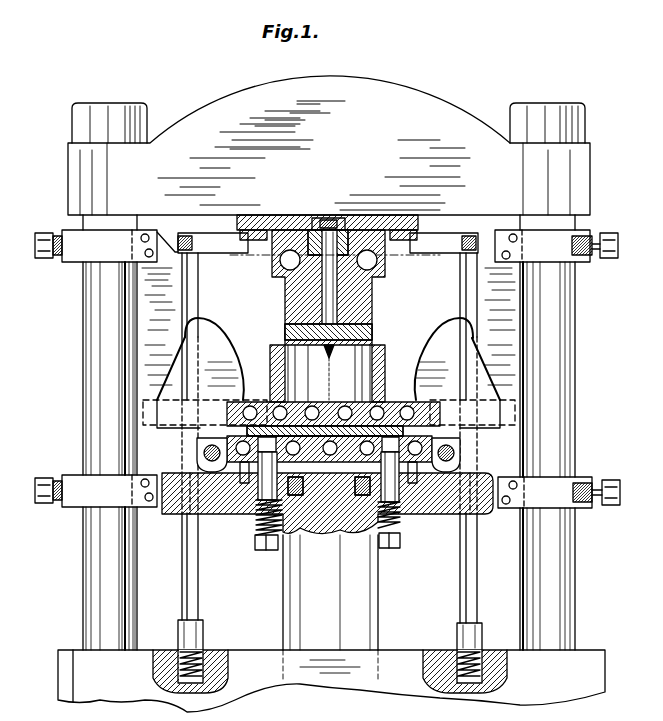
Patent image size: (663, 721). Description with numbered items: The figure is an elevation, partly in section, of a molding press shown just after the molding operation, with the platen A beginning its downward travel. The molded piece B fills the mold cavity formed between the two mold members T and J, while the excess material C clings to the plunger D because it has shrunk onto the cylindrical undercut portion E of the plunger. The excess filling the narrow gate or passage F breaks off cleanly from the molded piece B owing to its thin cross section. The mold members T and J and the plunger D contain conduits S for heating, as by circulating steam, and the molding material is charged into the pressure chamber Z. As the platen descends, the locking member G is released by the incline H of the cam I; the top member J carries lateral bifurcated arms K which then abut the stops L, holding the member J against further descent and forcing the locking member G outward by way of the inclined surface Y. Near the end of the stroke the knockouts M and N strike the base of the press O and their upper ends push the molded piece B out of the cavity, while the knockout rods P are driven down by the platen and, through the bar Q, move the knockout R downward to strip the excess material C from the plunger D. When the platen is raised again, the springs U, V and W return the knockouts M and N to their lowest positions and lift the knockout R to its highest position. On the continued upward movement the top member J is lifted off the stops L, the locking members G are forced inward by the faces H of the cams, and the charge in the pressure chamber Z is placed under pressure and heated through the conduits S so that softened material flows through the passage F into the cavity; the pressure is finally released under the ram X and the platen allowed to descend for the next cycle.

The bar Q is at (220, 240).
The cam I is at (186, 278).
The conduits S is at (372, 262).
The cylindrical undercut portion E is at (287, 336).
The knockout R is at (328, 290).
The plunger D is at (372, 324).
The locking member G is at (205, 322).
The incline H is at (176, 358).
The top member of the mold J is at (251, 404).
The pressure chamber Z is at (385, 350).
The excess material C is at (345, 352).
The gate or passage F is at (328, 372).
The molded piece B is at (408, 412).
The inclined surface Y is at (420, 412).
The lateral bifurcated arms K is at (143, 413).
The stops L is at (150, 472).
The mold member T is at (432, 438).
The platen A is at (242, 516).
The knockout M is at (258, 545).
The spring U is at (262, 550).
The knockout N is at (395, 505).
The spring V is at (400, 542).
The knockout rods P is at (185, 580).
The ram X is at (383, 606).
The base of the press O is at (392, 655).
The spring W is at (215, 658).